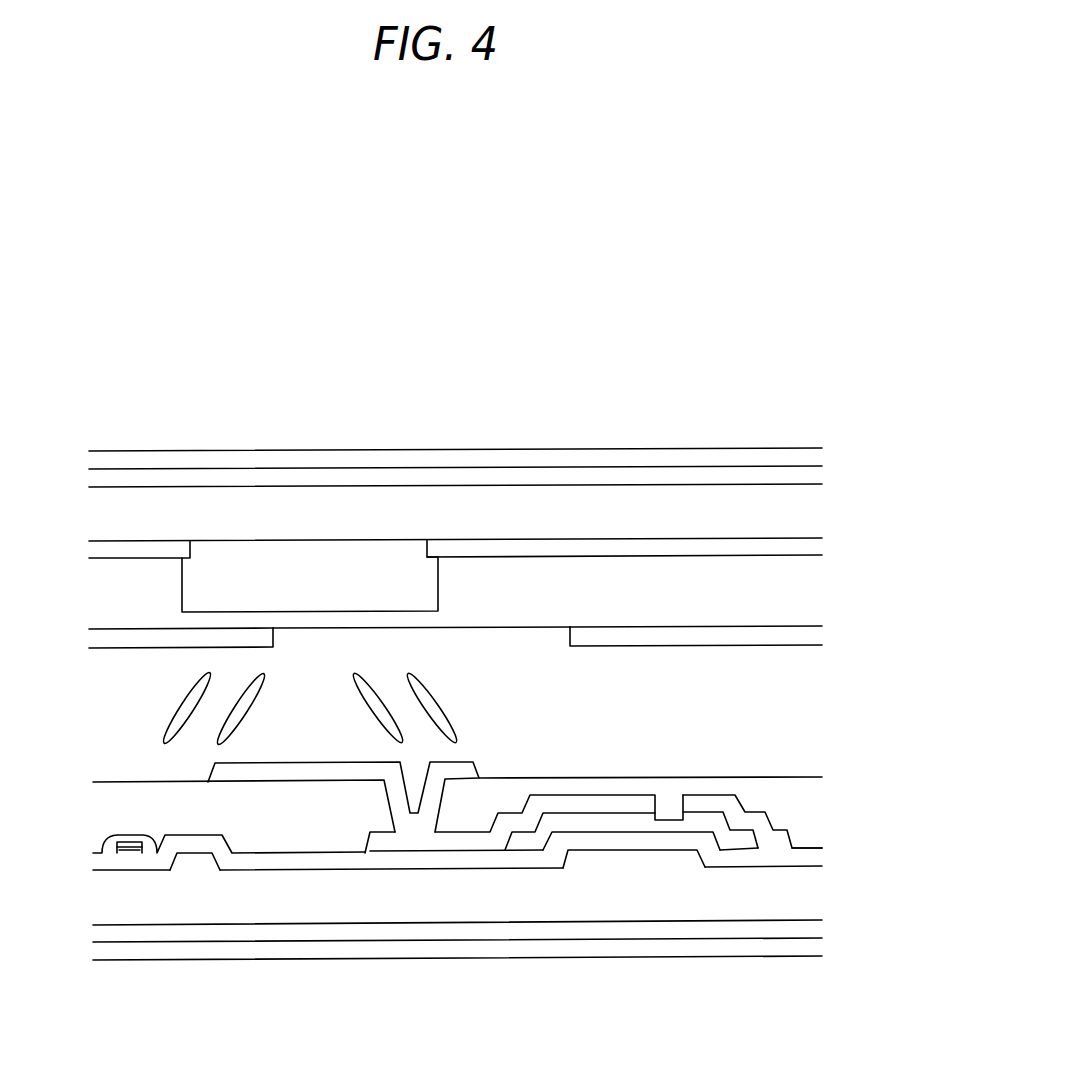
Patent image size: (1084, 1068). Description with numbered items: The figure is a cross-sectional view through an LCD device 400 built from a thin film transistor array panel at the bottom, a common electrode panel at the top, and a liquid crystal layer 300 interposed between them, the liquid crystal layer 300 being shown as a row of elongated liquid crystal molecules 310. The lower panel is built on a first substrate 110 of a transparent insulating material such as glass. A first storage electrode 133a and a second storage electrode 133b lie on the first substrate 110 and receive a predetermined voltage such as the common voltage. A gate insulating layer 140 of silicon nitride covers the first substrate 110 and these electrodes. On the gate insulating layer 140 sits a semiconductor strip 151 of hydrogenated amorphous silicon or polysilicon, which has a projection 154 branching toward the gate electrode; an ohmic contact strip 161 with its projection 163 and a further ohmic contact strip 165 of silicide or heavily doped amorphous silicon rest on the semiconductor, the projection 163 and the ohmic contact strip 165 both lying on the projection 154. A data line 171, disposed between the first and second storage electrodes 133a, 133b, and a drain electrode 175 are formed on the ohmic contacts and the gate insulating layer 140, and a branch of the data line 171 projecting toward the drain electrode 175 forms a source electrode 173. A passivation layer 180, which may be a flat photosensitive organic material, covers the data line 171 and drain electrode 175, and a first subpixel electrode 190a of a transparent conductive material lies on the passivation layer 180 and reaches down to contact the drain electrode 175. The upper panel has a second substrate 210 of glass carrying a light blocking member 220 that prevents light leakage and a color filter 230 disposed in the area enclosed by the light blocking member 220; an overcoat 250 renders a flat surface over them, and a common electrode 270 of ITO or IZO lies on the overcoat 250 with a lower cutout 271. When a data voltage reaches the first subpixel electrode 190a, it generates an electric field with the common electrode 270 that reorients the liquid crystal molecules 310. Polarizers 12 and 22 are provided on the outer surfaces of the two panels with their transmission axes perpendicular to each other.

The LCD device 400 is at (455, 292).
The polarizer 22 is at (353, 458).
The second substrate 210 is at (132, 503).
The light blocking member 220 is at (168, 552).
The color filter 230 is at (287, 560).
The overcoat 250 is at (482, 578).
The common electrode 270 is at (228, 637).
The lower cutout 271 is at (309, 658).
The liquid crystal layer 300 is at (539, 706).
The liquid crystal molecules 310 is at (437, 705).
The first subpixel electrode 190a is at (462, 770).
The passivation layer 180 is at (260, 833).
The drain electrode 175 is at (436, 843).
The source electrode 173 is at (707, 798).
The ohmic contact strip 165 is at (576, 818).
The projection of ohmic contact strip 163 is at (746, 832).
The projection of semiconductor strip 154 is at (675, 827).
The gate insulating layer 140 is at (490, 853).
The data line 171 is at (123, 840).
The semiconductor strip 151 is at (136, 853).
The ohmic contact strip 161 is at (125, 853).
The first storage electrode 133a is at (192, 860).
The second storage electrode 133b is at (632, 873).
The first substrate 110 is at (322, 905).
The polarizer 12 is at (372, 940).